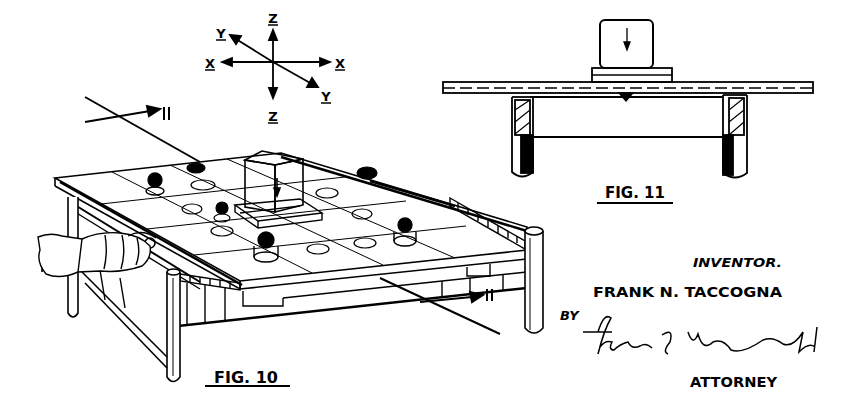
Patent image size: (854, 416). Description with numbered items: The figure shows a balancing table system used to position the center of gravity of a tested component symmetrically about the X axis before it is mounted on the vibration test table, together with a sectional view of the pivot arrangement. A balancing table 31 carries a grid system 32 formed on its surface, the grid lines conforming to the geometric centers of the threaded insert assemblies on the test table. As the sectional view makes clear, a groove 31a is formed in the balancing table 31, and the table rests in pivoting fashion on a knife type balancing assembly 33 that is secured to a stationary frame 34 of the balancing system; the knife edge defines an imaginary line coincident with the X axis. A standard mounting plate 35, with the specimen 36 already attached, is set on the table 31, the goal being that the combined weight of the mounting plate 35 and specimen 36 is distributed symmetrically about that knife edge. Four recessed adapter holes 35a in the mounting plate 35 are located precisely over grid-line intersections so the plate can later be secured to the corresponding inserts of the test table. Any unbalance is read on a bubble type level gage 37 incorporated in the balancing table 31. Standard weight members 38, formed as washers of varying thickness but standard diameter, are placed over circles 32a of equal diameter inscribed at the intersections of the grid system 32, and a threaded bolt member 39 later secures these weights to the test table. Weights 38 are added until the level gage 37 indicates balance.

In FIG. 10, the balancing table 31 is at (337, 167).
In FIG. 11, the balancing table 31 is at (508, 82).
In FIG. 11, the groove 31a is at (640, 97).
In FIG. 10, the grid system 32 is at (118, 178).
In FIG. 10, the circles 32a is at (395, 196).
In FIG. 10, the knife type balancing assembly 33 is at (441, 200).
In FIG. 11, the knife type balancing assembly 33 is at (625, 101).
In FIG. 10, the stationary frame 34 is at (160, 358).
In FIG. 11, the stationary frame 34 is at (748, 140).
In FIG. 11, the mounting plate 35 is at (602, 77).
In FIG. 10, the recessed adapter holes 35a is at (226, 200).
In FIG. 10, the specimen 36 is at (303, 161).
In FIG. 11, the specimen 36 is at (653, 48).
In FIG. 10, the level gage 37 is at (168, 227).
In FIG. 10, the standard weight members 38 is at (253, 257).
In FIG. 10, the threaded bolt member 39 is at (157, 172).